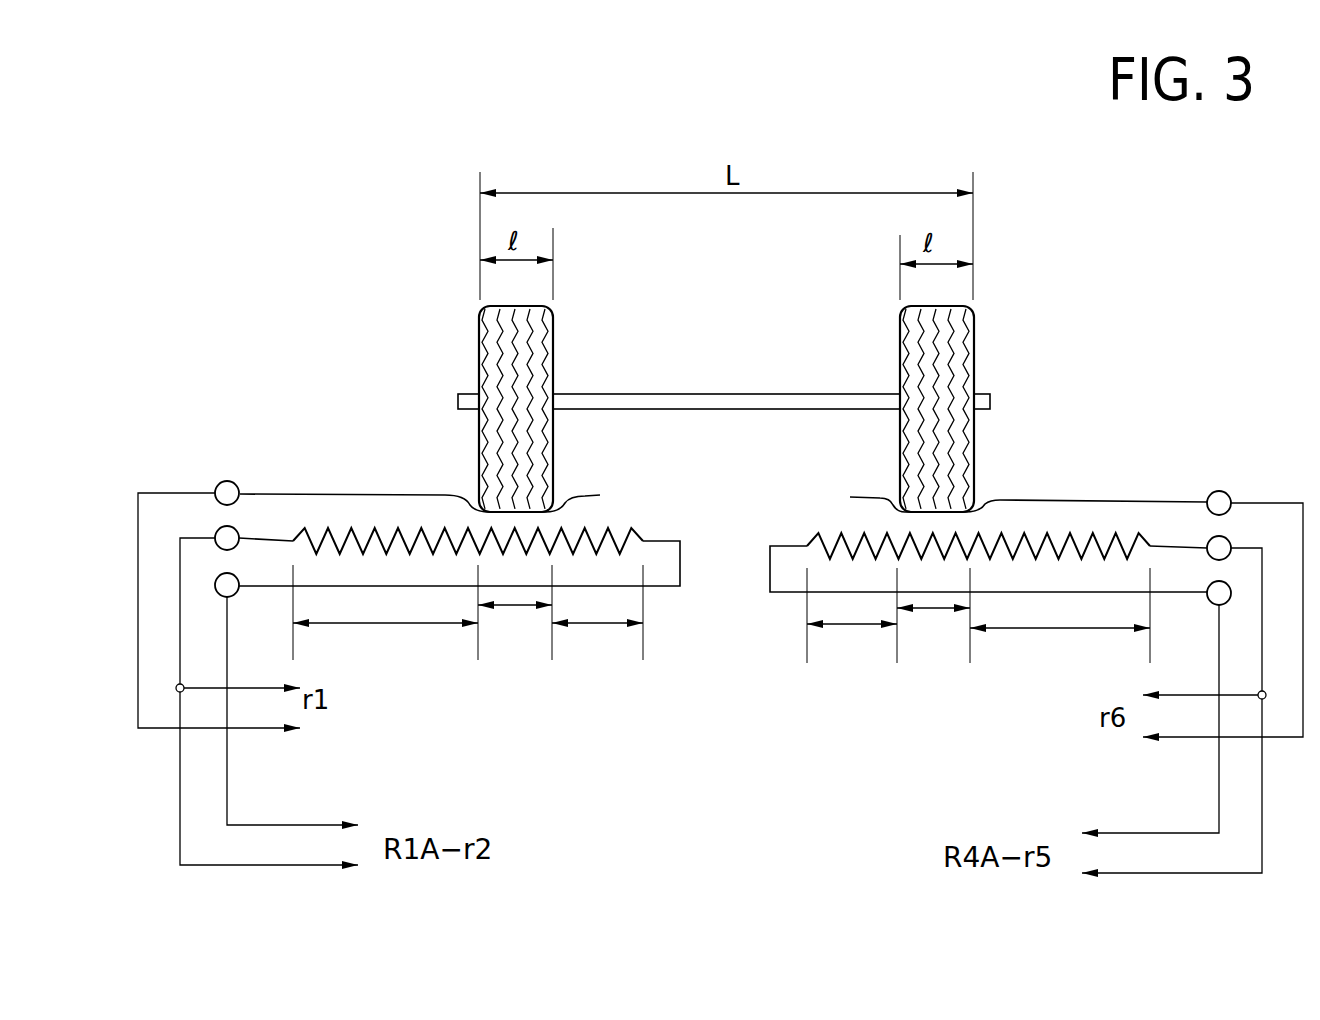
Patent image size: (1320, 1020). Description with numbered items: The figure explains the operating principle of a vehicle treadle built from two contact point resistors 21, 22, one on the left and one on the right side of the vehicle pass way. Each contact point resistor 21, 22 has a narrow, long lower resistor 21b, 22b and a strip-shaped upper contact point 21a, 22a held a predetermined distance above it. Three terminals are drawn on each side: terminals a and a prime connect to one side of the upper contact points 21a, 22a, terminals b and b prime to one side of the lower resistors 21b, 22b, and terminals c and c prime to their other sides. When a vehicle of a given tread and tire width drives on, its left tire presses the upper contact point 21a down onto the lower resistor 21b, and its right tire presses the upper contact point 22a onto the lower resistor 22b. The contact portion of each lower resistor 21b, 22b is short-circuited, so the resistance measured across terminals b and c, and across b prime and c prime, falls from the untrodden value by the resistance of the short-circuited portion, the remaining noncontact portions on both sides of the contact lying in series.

The contact point resistor 21 is at (345, 477).
The upper contact point 21a is at (600, 495).
The lower resistor 21b is at (673, 605).
The contact point resistor 22 is at (1107, 487).
The upper contact point 22a is at (850, 497).
The lower resistor 22b is at (779, 613).